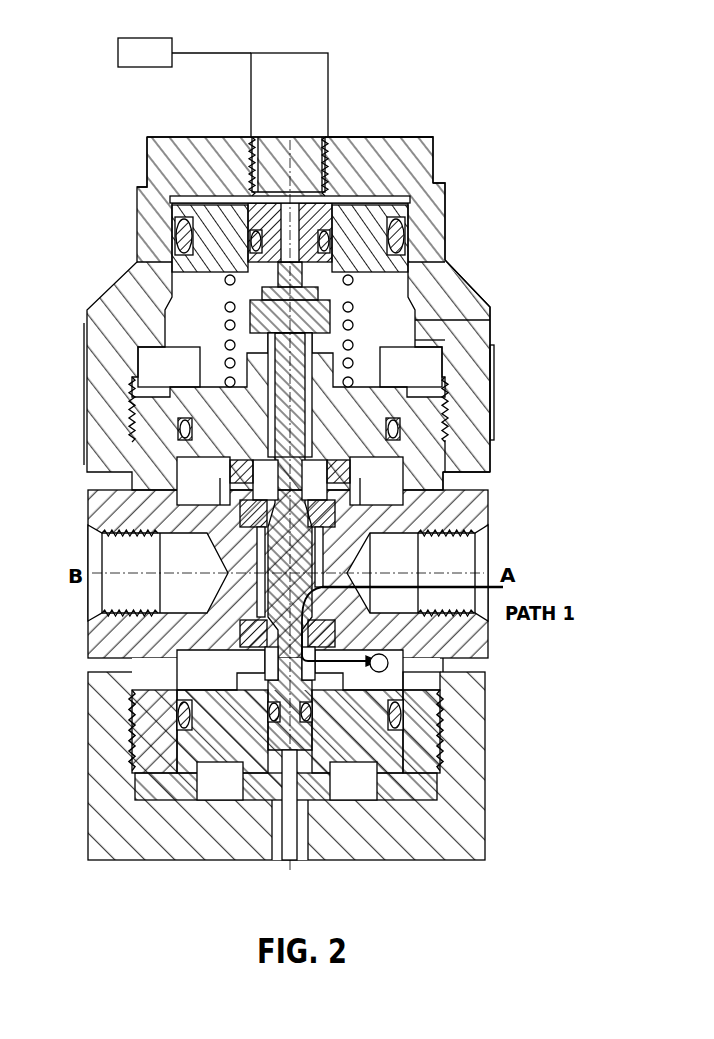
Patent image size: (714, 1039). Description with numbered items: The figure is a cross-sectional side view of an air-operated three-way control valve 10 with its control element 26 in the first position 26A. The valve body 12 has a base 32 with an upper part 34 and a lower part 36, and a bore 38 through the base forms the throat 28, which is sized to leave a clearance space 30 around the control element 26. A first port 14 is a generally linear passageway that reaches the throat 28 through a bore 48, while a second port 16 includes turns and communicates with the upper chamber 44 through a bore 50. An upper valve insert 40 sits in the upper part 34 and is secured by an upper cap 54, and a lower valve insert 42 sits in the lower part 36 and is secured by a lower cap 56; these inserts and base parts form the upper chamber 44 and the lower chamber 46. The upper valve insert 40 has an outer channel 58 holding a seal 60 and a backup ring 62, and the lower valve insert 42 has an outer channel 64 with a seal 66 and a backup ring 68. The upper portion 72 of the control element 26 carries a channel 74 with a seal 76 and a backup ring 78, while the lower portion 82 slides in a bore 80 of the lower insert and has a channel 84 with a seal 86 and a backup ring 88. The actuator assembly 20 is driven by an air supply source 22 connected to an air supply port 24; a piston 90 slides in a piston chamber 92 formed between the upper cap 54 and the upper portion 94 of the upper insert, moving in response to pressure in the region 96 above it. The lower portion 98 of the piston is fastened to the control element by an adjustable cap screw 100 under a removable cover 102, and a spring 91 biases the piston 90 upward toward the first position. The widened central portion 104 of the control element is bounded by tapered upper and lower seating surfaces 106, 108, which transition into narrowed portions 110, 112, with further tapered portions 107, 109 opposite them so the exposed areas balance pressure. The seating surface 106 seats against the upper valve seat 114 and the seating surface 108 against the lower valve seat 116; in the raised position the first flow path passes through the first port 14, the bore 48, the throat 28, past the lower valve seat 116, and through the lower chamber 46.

The control valve 10 is at (103, 144).
The valve body 12 is at (100, 355).
The first port 14 is at (465, 540).
The second port 16 is at (115, 550).
The actuator assembly 20 is at (428, 133).
The air supply source 22 is at (150, 38).
The air supply port 24 is at (308, 175).
The control element 26 is at (110, 420).
The first position 26A is at (493, 345).
The throat 28 is at (200, 600).
The clearance space 30 is at (195, 518).
The base 32 is at (470, 520).
The upper part 34 is at (435, 380).
The lower part 36 is at (425, 717).
The bore 38 is at (225, 590).
The upper valve insert 40 is at (445, 280).
The lower valve insert 42 is at (175, 770).
The upper chamber 44 is at (465, 445).
The lower chamber 46 is at (368, 862).
The bore 48 is at (405, 488).
The bore 50 is at (190, 505).
The upper cap 54 is at (393, 192).
The lower cap 56 is at (460, 810).
The outer channel 58 is at (425, 350).
The seal 60 is at (225, 350).
The backup ring 62 is at (150, 380).
The outer channel 64 is at (397, 862).
The seal 66 is at (420, 710).
The backup ring 68 is at (395, 728).
The upper portion 72 is at (440, 215).
The channel 74 is at (170, 190).
The seal 76 is at (190, 255).
The backup ring 78 is at (185, 230).
The bore 80 is at (330, 862).
The lower portion 82 is at (305, 862).
The channel 84 is at (285, 862).
The seal 86 is at (150, 740).
The backup ring 88 is at (272, 862).
The piston 90 is at (195, 160).
The spring 91 is at (250, 232).
The piston chamber 92 is at (372, 160).
The upper portion 94 is at (450, 335).
The region 96 is at (300, 262).
The lower portion 98 is at (330, 250).
The cap screw 100 is at (322, 305).
The removable cover 102 is at (255, 196).
The central portion 104 is at (380, 562).
The upper seating surface 106 is at (447, 440).
The tapered portion 107 is at (425, 318).
The lower seating surface 108 is at (215, 672).
The tapered portion 109 is at (200, 728).
The narrowed portion 110 is at (185, 432).
The narrowed portion 112 is at (195, 683).
The upper valve seat 114 is at (450, 462).
The lower valve seat 116 is at (392, 663).